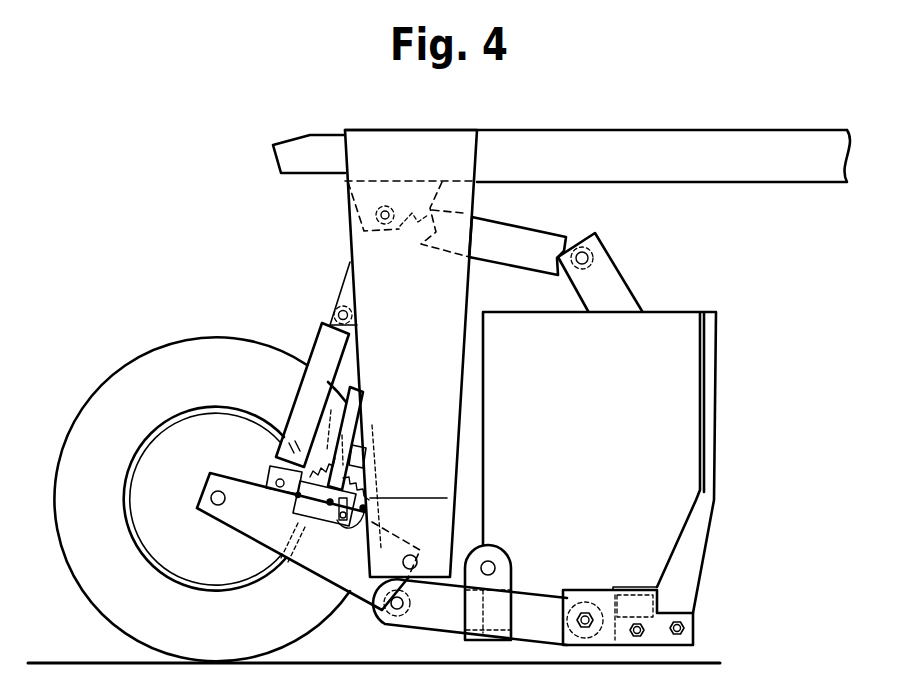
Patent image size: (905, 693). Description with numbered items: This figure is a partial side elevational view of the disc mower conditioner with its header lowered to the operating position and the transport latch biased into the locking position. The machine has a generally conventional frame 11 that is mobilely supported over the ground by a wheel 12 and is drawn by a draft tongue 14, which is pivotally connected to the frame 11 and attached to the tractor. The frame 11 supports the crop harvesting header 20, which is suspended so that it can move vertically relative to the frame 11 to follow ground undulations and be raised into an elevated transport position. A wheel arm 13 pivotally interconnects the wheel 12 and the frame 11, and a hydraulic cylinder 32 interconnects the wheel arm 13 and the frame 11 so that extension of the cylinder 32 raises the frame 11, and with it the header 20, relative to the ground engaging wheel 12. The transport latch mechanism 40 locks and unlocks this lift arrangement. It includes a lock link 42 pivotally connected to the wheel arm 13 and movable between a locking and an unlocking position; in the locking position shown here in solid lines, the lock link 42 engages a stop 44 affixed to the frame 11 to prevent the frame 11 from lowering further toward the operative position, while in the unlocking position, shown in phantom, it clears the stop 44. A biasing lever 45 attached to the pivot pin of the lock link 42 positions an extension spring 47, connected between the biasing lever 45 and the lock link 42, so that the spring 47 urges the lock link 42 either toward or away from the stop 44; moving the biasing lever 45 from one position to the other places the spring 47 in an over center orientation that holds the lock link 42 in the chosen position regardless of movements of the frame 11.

The draft tongue 14 is at (707, 131).
The frame 11 is at (380, 252).
The hydraulic cylinder 32 is at (320, 338).
The wheel 12 is at (140, 362).
The wheel arm 13 is at (270, 489).
The lock link 42 is at (287, 438).
The stop 44 is at (362, 452).
The extension spring 47 is at (297, 496).
The biasing lever 45 is at (305, 523).
The transport latch mechanism 40 is at (380, 396).
The crop harvesting header 20 is at (715, 373).